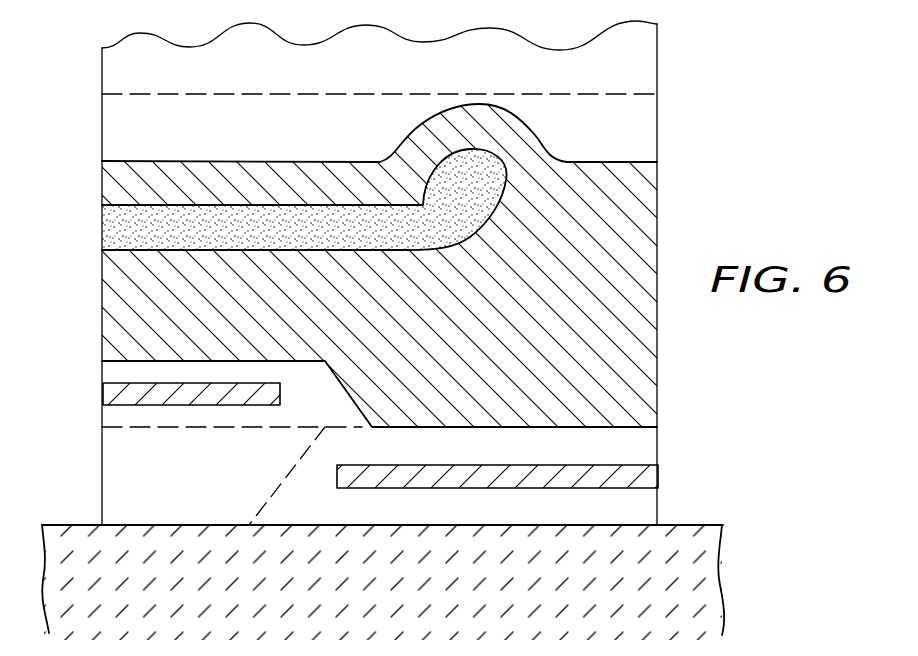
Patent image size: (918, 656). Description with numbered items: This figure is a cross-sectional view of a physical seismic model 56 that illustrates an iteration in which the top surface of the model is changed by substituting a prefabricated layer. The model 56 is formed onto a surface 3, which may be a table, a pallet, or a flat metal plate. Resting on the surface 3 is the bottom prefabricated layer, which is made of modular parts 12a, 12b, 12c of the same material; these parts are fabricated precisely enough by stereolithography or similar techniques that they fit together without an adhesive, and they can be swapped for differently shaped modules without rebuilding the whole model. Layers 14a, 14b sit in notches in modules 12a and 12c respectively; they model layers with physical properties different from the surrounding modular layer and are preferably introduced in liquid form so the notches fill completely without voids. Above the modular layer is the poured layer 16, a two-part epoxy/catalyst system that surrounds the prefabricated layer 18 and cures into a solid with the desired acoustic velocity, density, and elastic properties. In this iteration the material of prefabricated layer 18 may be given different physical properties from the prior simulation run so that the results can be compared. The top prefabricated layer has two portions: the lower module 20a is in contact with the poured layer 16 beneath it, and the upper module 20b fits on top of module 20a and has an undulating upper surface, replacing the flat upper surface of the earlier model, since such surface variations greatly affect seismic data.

The model 56 is at (690, 43).
The upper module 20b is at (264, 84).
The lower module 20a is at (308, 139).
The prefabricated layer 18 is at (350, 239).
The poured layer 16 is at (410, 306).
The modular part 12c is at (340, 411).
The modular part 12b is at (202, 494).
The modular part 12a is at (327, 516).
The layer 14b is at (103, 391).
The layer 14a is at (658, 473).
The surface 3 is at (376, 592).